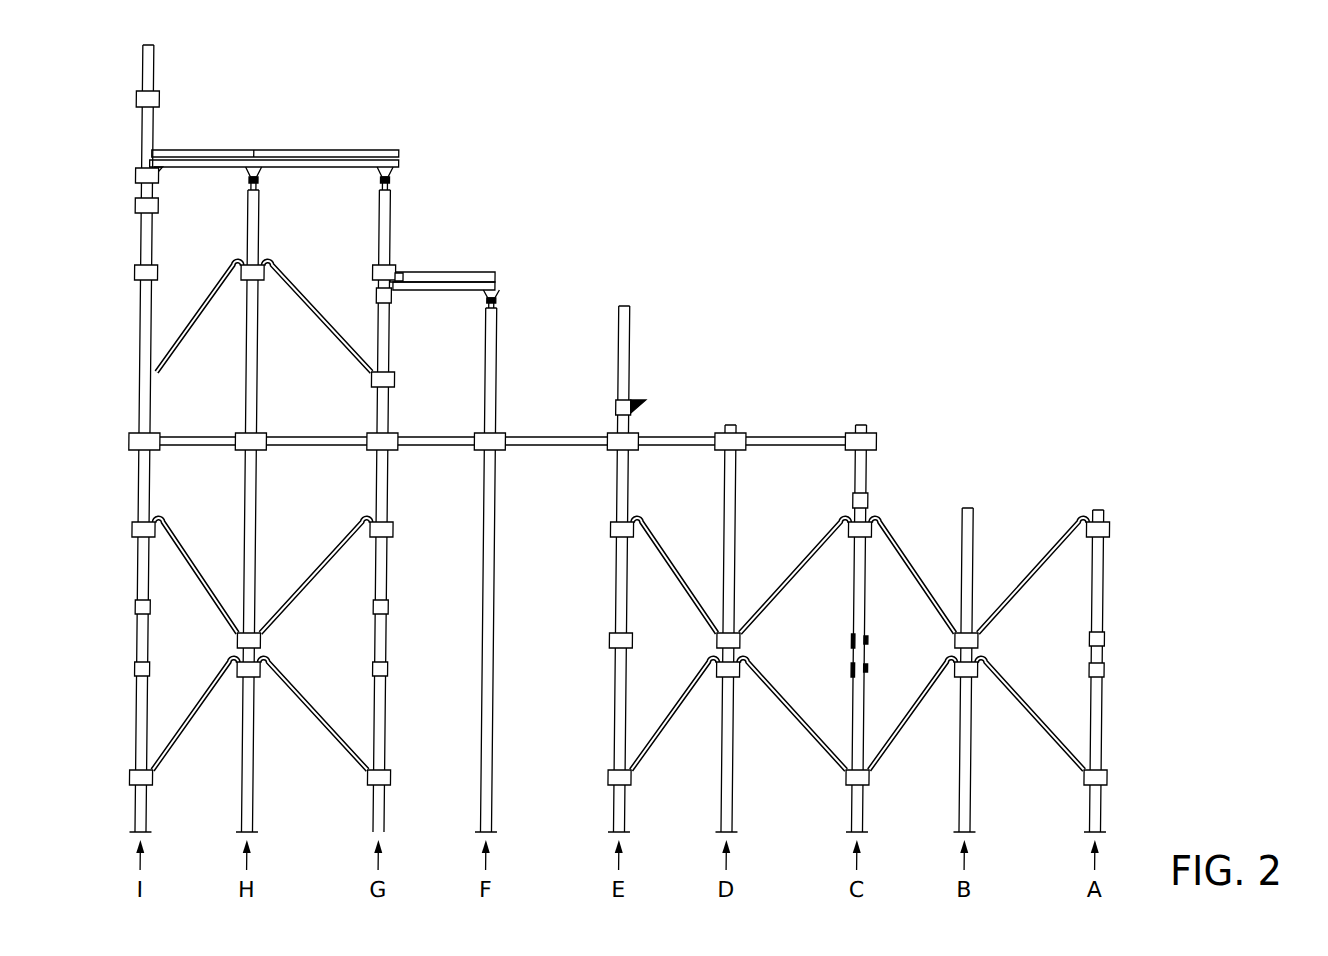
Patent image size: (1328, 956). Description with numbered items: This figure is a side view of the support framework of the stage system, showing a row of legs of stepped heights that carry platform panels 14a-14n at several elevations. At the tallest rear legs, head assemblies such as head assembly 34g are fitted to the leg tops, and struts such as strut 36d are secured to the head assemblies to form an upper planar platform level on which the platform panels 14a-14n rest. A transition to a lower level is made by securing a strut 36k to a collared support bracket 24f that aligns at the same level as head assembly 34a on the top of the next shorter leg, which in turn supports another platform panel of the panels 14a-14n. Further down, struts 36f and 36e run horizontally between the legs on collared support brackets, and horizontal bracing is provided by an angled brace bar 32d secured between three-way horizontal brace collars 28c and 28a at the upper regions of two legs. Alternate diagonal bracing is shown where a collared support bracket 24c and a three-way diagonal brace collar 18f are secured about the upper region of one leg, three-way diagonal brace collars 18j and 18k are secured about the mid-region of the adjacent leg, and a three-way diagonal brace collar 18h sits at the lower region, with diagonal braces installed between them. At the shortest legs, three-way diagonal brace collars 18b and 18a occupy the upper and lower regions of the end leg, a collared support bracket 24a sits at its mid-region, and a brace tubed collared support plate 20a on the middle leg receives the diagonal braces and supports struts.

The platform panels 14a-14n is at (302, 153).
The strut 36d is at (346, 163).
The head assembly 34g is at (392, 180).
The strut 36k is at (397, 282).
The head assembly 34a is at (495, 292).
The collared support bracket 24f is at (393, 294).
The strut 36f is at (178, 439).
The strut 36e is at (291, 439).
The angled brace bar 32d is at (813, 438).
The 3-way horizontal brace collar 28c is at (745, 433).
The 3-way horizontal brace collar 28a is at (868, 440).
The collared support bracket 24c is at (868, 495).
The 3-way diagonal brace collar 18f is at (862, 533).
The 3-way diagonal brace collar 18j is at (866, 637).
The 3-way diagonal brace collar 18k is at (866, 665).
The 3-way diagonal brace collar 18h is at (868, 775).
The 3-way diagonal brace collar 18b is at (1107, 533).
The collared support bracket 24a is at (1105, 636).
The brace tubed collared support plate 20a is at (1112, 648).
The 3-way diagonal brace collar 18a is at (1102, 667).